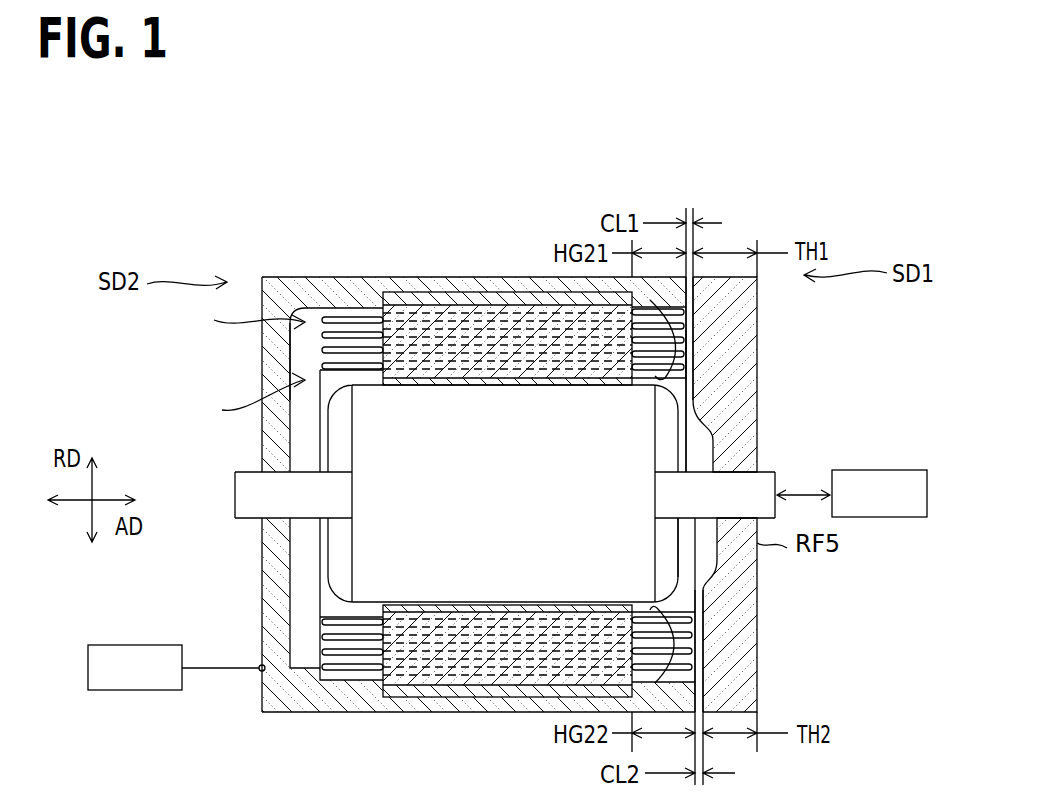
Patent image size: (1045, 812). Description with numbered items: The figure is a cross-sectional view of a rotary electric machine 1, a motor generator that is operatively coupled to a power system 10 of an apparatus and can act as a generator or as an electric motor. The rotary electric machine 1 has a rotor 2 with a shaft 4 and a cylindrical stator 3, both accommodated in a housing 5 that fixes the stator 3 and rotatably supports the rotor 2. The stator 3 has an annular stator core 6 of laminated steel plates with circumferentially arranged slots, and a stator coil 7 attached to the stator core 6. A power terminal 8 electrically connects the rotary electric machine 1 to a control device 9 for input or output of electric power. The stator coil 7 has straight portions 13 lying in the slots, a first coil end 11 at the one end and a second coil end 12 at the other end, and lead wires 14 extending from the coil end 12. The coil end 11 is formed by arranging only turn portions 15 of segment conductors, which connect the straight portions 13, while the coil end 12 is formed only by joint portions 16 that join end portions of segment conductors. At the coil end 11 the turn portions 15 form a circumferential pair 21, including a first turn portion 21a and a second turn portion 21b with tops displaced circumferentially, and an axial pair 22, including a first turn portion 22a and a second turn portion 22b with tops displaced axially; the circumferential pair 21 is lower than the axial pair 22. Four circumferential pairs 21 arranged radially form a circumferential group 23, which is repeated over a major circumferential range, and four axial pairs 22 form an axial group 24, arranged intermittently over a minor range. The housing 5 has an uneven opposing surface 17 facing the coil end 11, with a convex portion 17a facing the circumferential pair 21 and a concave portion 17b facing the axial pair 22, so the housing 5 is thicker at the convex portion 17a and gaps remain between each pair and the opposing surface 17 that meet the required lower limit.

The rotary electric machine 1 is at (490, 467).
The rotor 2 is at (324, 432).
The stator 3 is at (507, 460).
The shaft 4 is at (235, 494).
The housing 5 is at (321, 277).
The stator core 6 is at (455, 292).
The stator coil 7 is at (249, 317).
The power terminal 8 is at (260, 666).
The control device 9 is at (107, 645).
The power system 10 is at (880, 470).
The coil end 11 is at (695, 403).
The coil end 12 is at (244, 399).
The straight portion 13 is at (497, 300).
The lead wire 14 is at (303, 680).
The turn portion 15 is at (690, 357).
The joint portion 16 is at (292, 360).
The opposing surface 17 is at (755, 494).
The convex portion 17a is at (690, 333).
The concave portion 17b is at (700, 643).
The circumferential pair 21 is at (628, 328).
The first turn portion 21a is at (352, 343).
The second turn portion 21b is at (652, 303).
The axial pair 22 is at (628, 653).
The first turn portion 22a is at (352, 644).
The second turn portion 22b is at (697, 673).
The circumferential group 23 is at (665, 378).
The axial group 24 is at (655, 610).